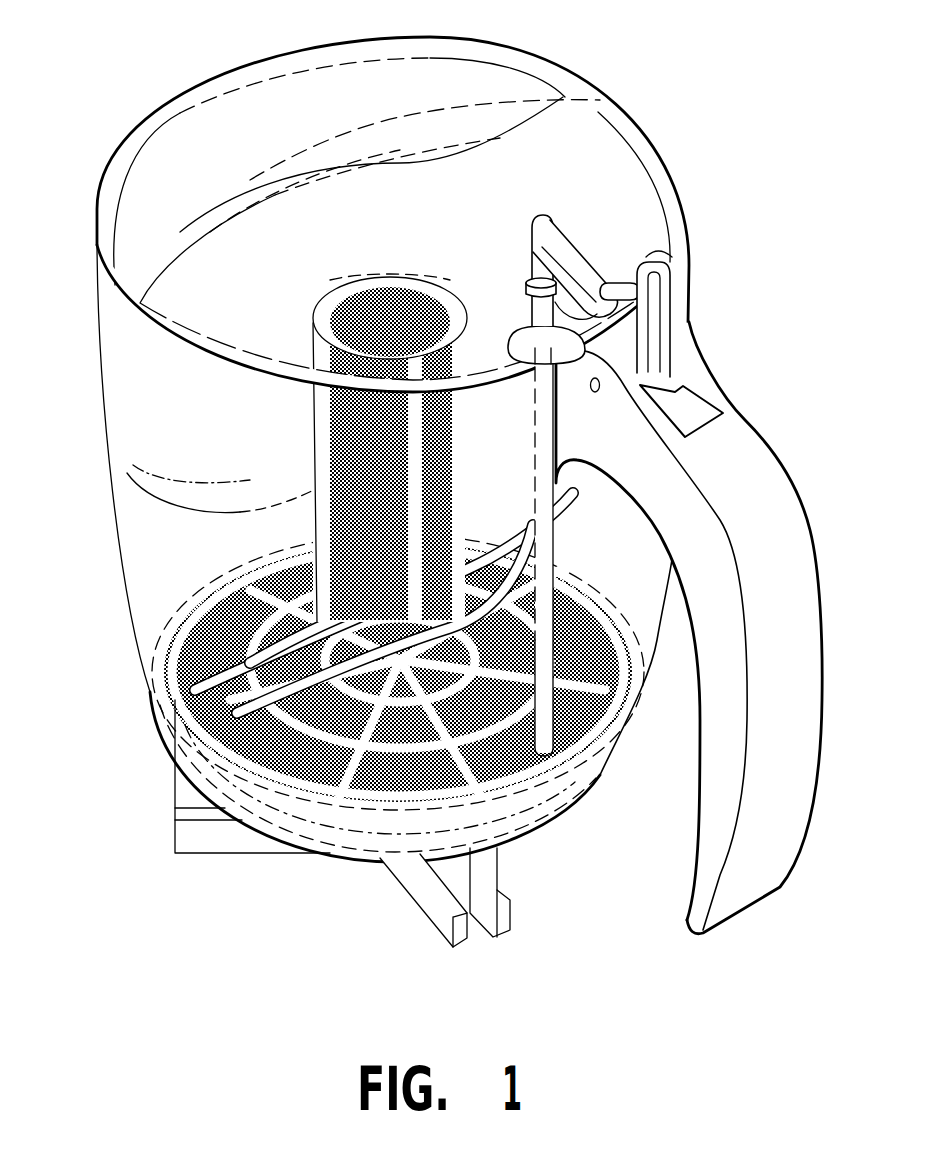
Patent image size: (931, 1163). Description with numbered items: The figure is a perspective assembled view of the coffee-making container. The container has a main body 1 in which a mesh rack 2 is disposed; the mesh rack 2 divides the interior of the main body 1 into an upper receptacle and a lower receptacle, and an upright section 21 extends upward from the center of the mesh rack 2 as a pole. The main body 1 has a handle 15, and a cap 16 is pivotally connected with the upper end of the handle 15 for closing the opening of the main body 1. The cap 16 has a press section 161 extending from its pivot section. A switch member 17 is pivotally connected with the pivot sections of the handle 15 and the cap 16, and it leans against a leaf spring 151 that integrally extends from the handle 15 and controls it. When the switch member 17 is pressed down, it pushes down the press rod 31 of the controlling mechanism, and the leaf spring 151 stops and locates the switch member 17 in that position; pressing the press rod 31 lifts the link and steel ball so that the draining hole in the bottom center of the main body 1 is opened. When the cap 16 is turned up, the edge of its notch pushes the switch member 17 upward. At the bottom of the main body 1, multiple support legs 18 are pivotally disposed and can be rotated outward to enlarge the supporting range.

The main body 1 is at (100, 403).
The mesh rack 2 is at (190, 600).
The handle 15 is at (753, 530).
The cap 16 is at (355, 90).
The switch member 17 is at (600, 270).
The support legs 18 is at (422, 898).
The upright section 21 is at (325, 450).
The press rod 31 is at (545, 553).
The leaf spring 151 is at (660, 387).
The press section 161 is at (667, 312).